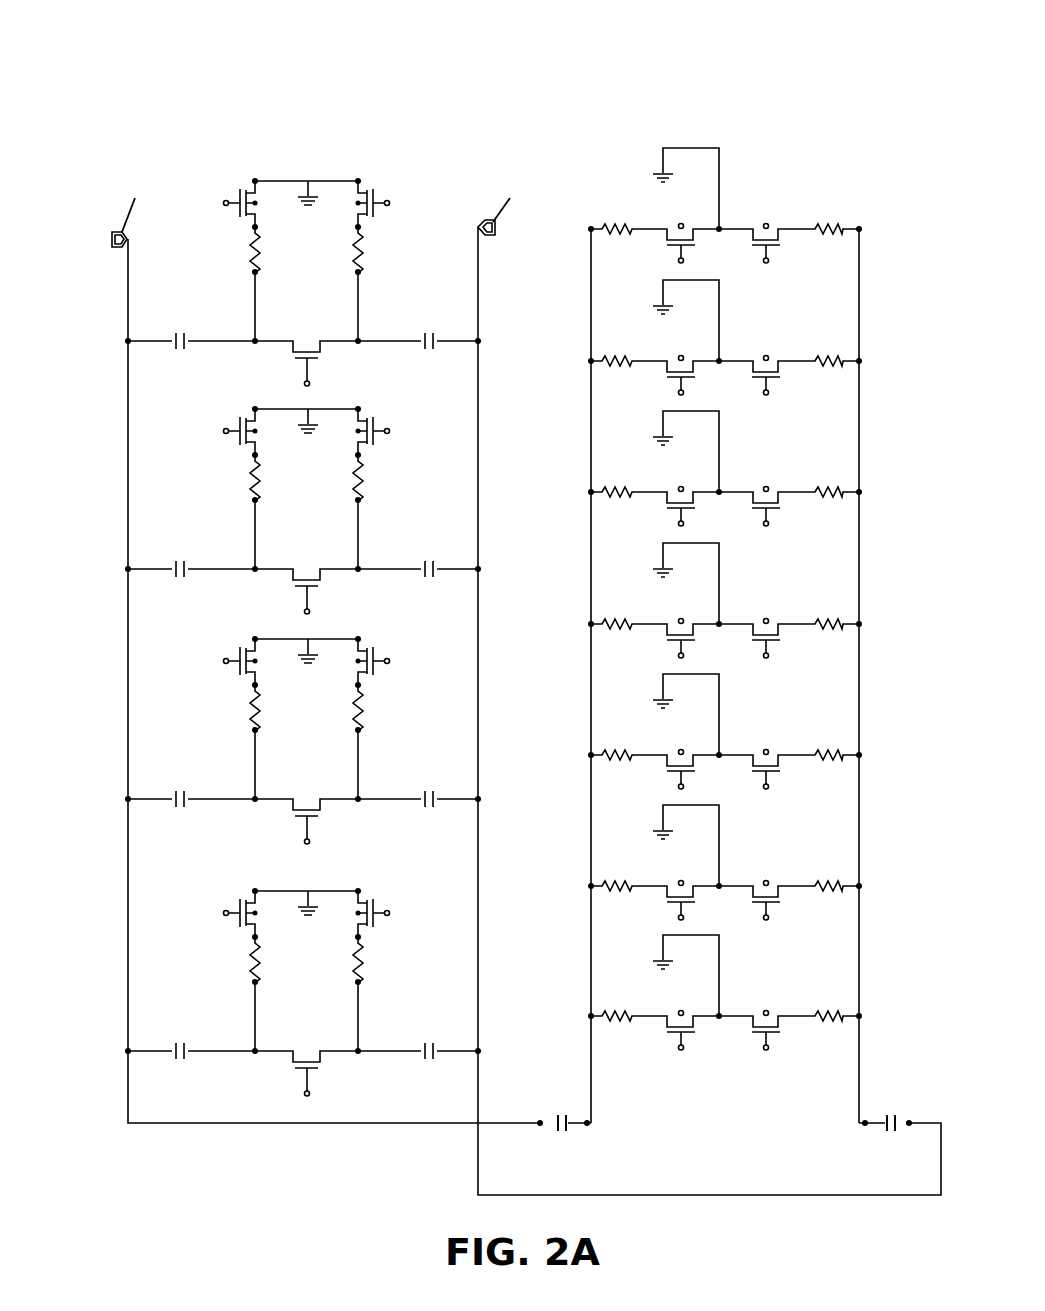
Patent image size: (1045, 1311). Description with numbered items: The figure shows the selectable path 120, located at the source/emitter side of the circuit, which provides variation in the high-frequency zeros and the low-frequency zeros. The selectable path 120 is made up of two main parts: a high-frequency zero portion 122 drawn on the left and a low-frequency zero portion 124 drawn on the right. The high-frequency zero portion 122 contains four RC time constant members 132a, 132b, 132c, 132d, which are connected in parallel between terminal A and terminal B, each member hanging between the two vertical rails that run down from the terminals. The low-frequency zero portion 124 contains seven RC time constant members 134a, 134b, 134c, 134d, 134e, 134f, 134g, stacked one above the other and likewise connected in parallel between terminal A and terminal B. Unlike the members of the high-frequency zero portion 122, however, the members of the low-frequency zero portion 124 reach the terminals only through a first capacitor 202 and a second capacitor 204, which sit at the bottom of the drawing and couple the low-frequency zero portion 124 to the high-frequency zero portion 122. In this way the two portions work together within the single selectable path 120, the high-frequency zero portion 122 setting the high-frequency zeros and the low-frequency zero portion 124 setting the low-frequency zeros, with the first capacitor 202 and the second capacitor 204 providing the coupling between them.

The selectable path 120 is at (117, 45).
The high-frequency zero portion 122 is at (357, 107).
The low-frequency zero portion 124 is at (757, 107).
The RC time constant member 132a is at (128, 300).
The RC time constant member 132b is at (128, 507).
The RC time constant member 132c is at (128, 735).
The RC time constant member 132d is at (128, 995).
The RC time constant member 134a is at (862, 225).
The RC time constant member 134b is at (862, 357).
The RC time constant member 134c is at (862, 488).
The RC time constant member 134d is at (862, 620).
The RC time constant member 134e is at (862, 751).
The RC time constant member 134f is at (862, 882).
The RC time constant member 134g is at (862, 1012).
The first capacitor 202 is at (560, 1137).
The second capacitor 204 is at (890, 1137).